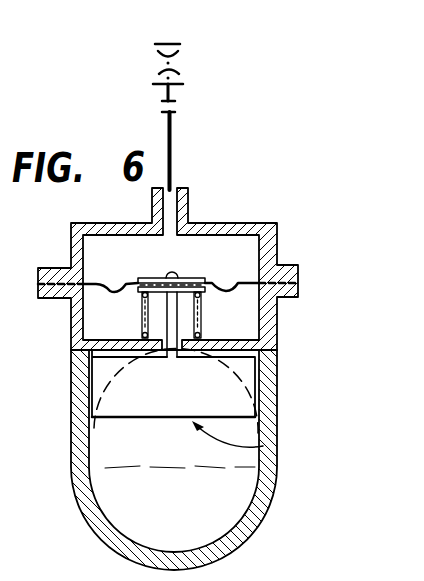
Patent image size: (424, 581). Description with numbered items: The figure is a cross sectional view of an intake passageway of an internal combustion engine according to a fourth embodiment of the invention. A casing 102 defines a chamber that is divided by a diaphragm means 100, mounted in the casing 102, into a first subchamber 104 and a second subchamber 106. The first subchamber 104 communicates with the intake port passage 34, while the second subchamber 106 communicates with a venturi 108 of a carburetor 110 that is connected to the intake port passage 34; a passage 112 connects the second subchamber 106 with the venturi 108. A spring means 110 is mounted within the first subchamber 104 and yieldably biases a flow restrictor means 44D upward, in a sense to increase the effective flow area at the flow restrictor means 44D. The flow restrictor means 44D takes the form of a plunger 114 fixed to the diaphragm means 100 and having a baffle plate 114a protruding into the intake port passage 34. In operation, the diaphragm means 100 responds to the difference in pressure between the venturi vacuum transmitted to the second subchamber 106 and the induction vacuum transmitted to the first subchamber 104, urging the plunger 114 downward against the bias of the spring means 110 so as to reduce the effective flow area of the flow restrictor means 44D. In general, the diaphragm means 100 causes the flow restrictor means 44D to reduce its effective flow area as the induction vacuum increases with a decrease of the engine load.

The intake port passage 34 is at (243, 497).
The flow restrictor means 44D is at (263, 446).
The diaphragm means 100 is at (228, 282).
The casing 102 is at (253, 223).
The first subchamber 104 is at (132, 325).
The second subchamber 106 is at (152, 268).
The venturi 108 is at (165, 63).
The carburetor 110 is at (201, 306).
The passage 112 is at (172, 142).
The plunger 114 is at (178, 323).
The baffle plate 114a is at (238, 377).